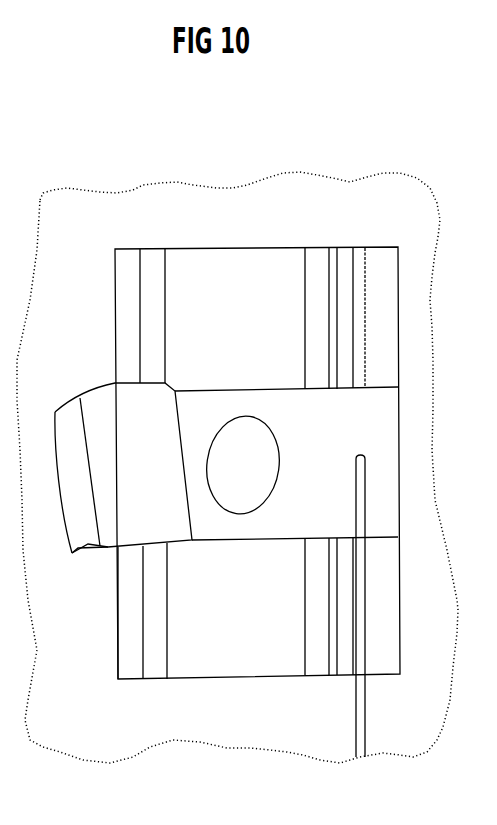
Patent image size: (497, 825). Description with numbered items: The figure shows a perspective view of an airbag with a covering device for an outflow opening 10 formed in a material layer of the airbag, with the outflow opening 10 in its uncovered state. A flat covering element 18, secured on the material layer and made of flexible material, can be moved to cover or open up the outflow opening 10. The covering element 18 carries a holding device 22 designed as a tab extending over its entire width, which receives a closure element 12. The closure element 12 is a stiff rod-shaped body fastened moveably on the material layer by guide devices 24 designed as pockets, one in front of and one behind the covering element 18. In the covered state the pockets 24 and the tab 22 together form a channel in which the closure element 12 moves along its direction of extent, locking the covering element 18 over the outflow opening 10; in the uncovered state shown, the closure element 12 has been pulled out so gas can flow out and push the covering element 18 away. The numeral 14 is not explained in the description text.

The outflow opening 10 is at (280, 463).
The closure element 12 is at (370, 484).
The substrate web 14 is at (237, 467).
The covering element 18 is at (123, 468).
The holding device 22 is at (74, 556).
The guide device 24 is at (365, 353).